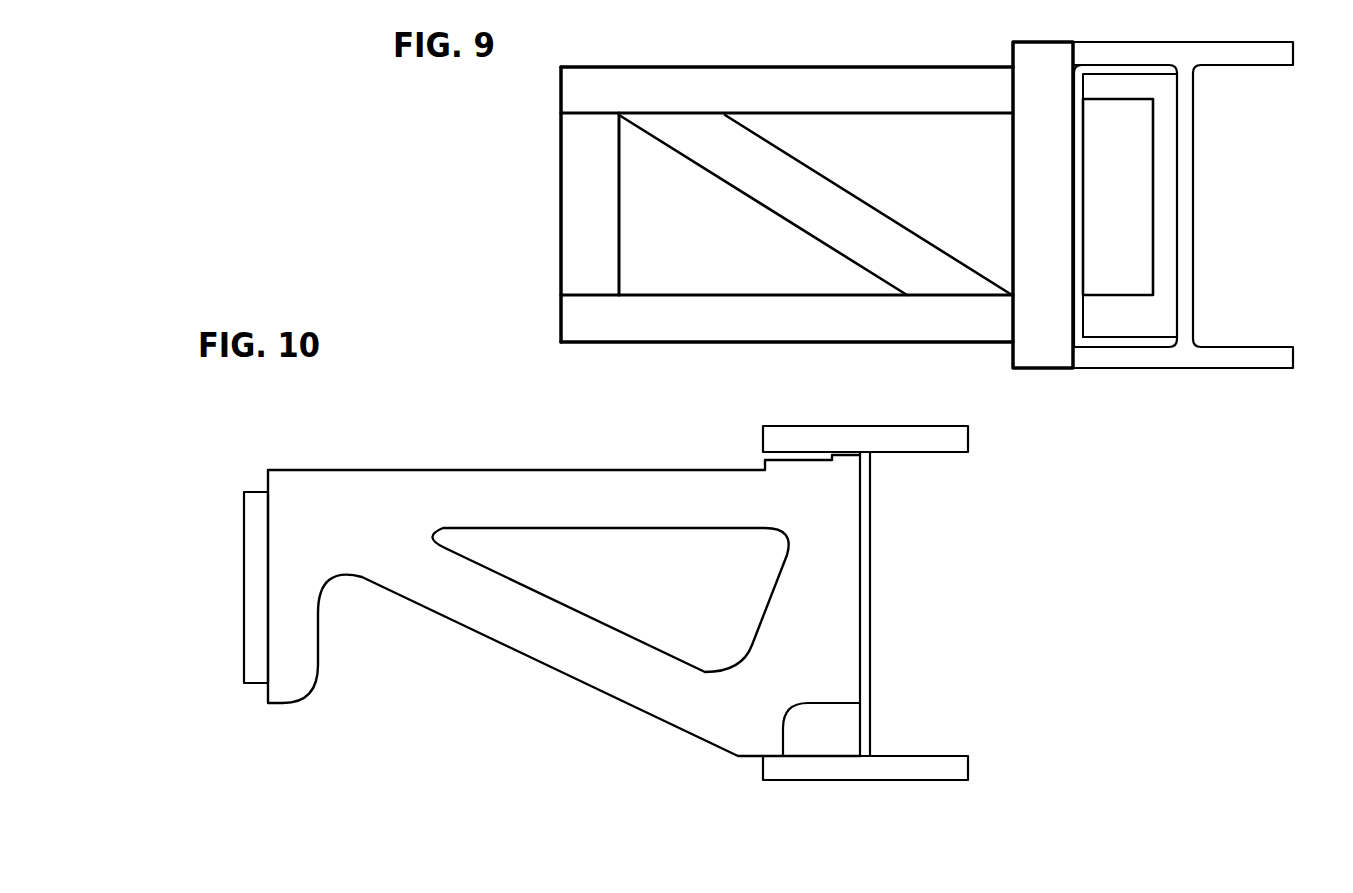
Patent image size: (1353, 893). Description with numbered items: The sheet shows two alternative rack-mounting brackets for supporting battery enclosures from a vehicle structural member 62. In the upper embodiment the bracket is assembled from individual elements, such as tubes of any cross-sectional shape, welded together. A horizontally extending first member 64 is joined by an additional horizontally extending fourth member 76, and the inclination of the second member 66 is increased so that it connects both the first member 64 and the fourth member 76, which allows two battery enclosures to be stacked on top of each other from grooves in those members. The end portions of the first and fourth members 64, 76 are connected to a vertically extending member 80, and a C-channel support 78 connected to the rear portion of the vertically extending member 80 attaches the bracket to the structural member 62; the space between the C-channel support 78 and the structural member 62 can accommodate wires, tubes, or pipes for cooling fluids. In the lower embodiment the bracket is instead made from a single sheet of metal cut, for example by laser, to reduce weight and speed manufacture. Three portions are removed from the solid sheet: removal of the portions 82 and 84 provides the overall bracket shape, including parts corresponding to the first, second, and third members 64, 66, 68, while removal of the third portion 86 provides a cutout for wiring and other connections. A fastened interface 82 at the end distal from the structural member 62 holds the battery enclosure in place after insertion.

In FIG. 9, the structural member 62 is at (1296, 54).
In FIG. 10, the structural member 62 is at (865, 603).
In FIG. 9, the first member 64 is at (844, 66).
In FIG. 9, the second member 66 is at (792, 227).
In FIG. 9, the third member 68 is at (560, 218).
In FIG. 9, the fourth member 76 is at (692, 343).
In FIG. 9, the C-channel support 78 is at (1111, 344).
In FIG. 9, the vertically extending member 80 is at (1027, 42).
In FIG. 10, the fastened interface 82 is at (243, 642).
In FIG. 10, the second portion 84 is at (415, 627).
In FIG. 10, the third portion 86 is at (825, 724).